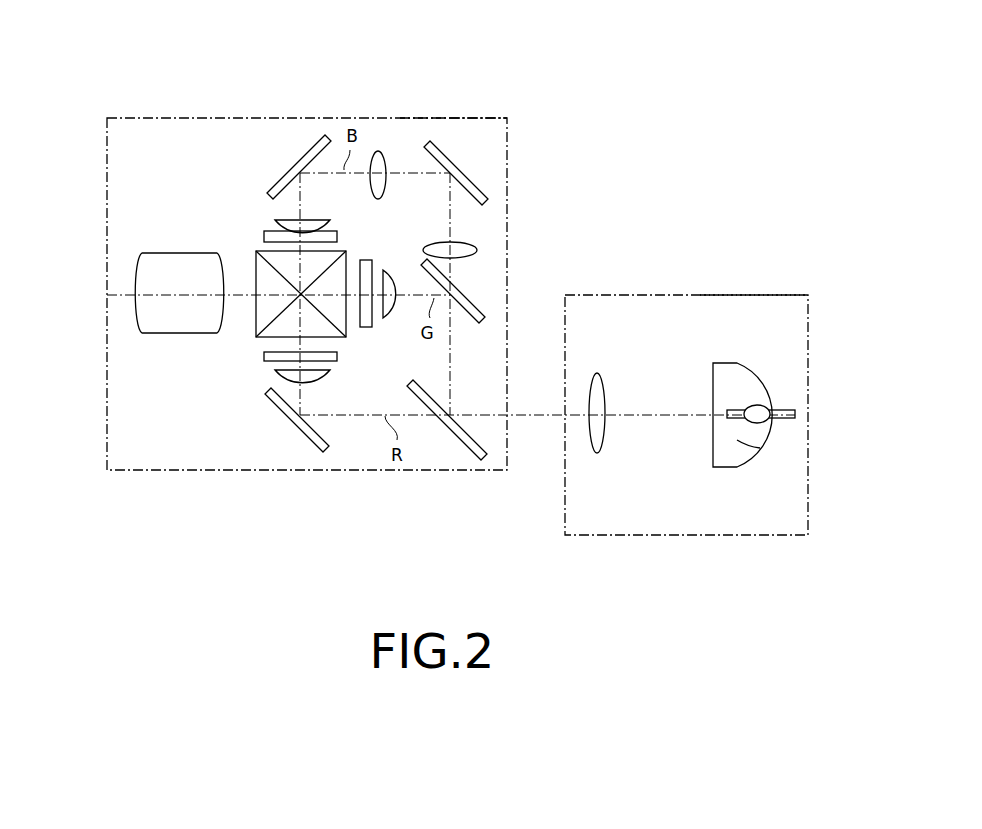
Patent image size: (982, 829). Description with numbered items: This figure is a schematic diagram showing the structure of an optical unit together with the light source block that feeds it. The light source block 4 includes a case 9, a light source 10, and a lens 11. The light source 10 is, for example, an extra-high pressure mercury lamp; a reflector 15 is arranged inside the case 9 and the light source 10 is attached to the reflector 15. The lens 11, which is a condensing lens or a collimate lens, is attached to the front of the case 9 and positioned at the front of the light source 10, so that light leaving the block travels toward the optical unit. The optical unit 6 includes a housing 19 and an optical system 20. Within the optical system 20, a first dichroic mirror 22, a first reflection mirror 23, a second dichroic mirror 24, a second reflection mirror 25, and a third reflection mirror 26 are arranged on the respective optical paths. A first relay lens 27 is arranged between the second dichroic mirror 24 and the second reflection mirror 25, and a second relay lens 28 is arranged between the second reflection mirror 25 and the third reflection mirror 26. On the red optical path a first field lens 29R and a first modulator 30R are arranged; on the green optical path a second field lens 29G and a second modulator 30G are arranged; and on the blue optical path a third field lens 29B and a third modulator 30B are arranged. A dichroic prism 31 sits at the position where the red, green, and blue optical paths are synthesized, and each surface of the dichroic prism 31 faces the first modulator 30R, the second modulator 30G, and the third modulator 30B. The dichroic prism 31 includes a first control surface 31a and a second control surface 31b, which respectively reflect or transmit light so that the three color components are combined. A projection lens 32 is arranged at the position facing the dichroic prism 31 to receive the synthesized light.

The light source block 4 is at (738, 295).
The optical unit 6 is at (473, 118).
The case 9 is at (677, 295).
The light source 10 is at (756, 403).
The lens 11 is at (602, 452).
The reflector 15 is at (758, 452).
The housing 19 is at (424, 118).
The optical system 20 is at (226, 134).
The first dichroic mirror 22 is at (455, 427).
The first reflection mirror 23 is at (285, 428).
The second dichroic mirror 24 is at (471, 298).
The second reflection mirror 25 is at (476, 174).
The third reflection mirror 26 is at (300, 148).
The first relay lens 27 is at (477, 244).
The second relay lens 28 is at (387, 152).
The third field lens 29B is at (266, 231).
The second field lens 29G is at (366, 328).
The first field lens 29R is at (272, 372).
The third modulator 30B is at (272, 216).
The second modulator 30G is at (390, 319).
The first modulator 30R is at (264, 356).
The dichroic prism 31 is at (346, 250).
The first control surface 31a is at (272, 272).
The second control surface 31b is at (257, 324).
The projection lens 32 is at (135, 310).